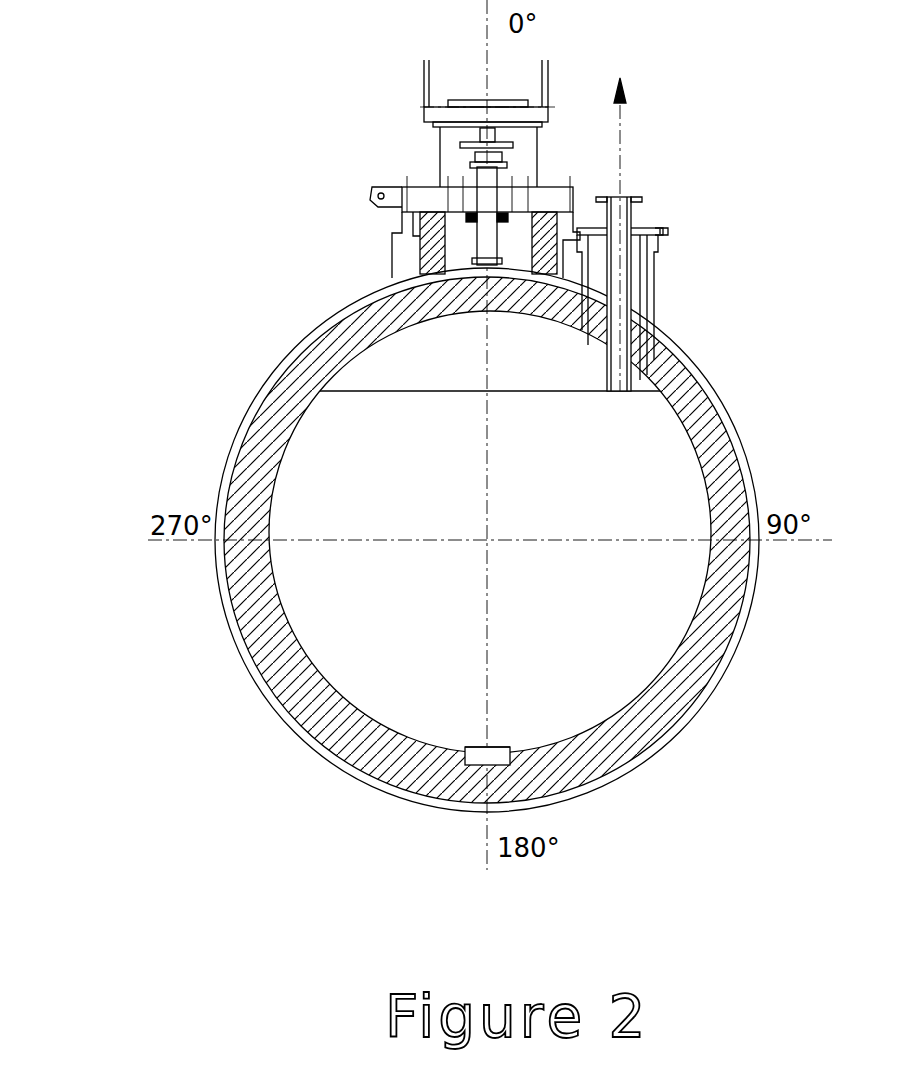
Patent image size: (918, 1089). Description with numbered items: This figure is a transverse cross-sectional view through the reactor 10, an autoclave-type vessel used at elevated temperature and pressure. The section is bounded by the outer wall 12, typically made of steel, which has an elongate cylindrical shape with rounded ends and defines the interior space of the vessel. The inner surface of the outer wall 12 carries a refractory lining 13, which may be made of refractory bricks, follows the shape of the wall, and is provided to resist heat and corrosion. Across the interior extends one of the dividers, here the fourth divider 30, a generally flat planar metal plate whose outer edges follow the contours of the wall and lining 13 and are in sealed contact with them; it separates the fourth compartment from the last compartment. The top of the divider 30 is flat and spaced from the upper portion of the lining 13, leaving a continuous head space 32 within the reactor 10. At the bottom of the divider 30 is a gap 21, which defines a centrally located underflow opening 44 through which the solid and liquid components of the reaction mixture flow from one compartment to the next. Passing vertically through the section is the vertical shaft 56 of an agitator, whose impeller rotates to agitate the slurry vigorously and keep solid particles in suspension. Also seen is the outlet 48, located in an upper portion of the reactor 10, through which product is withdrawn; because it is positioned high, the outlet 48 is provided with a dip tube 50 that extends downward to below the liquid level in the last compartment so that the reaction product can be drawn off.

The reactor 10 is at (185, 670).
The outer wall 12 is at (336, 766).
The refractory lining 13 is at (635, 743).
The gap 21 is at (493, 751).
The fourth divider 30 is at (405, 484).
The head space 32 is at (404, 347).
The underflow opening 44 is at (488, 762).
The outlet 48 is at (633, 192).
The dip tube 50 is at (633, 375).
The vertical shaft 56 is at (500, 362).